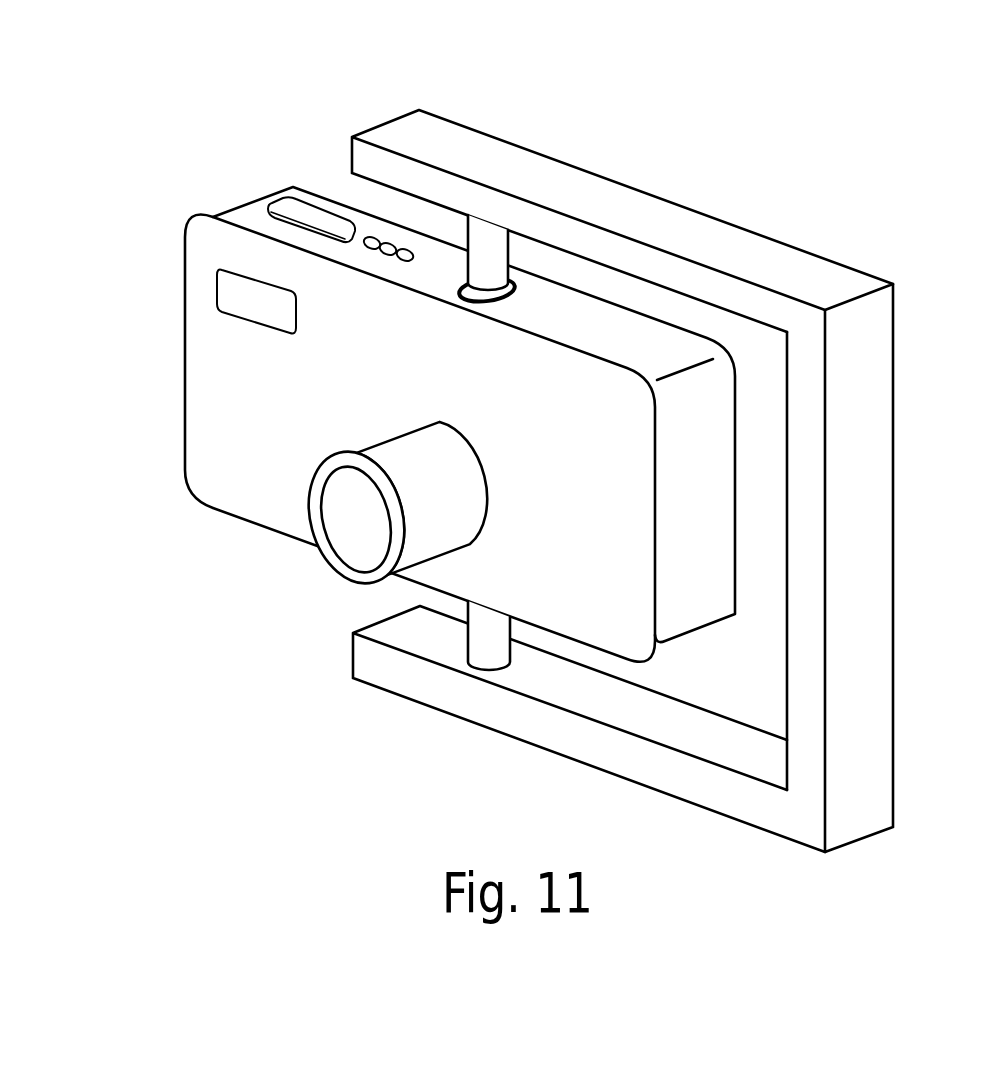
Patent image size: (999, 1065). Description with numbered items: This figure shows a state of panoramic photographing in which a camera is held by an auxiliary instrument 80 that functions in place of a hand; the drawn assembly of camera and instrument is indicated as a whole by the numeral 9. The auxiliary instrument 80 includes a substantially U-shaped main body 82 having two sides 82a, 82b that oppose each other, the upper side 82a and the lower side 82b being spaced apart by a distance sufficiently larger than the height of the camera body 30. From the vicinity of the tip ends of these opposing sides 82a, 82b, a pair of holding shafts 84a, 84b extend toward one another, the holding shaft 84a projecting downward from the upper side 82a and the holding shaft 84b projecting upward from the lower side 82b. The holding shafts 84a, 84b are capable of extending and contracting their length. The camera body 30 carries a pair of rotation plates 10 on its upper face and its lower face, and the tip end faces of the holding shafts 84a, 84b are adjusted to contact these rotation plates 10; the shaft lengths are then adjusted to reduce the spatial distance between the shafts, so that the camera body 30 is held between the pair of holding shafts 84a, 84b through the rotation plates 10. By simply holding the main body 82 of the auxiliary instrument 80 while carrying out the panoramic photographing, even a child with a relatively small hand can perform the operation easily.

The imaging system / camera assembly 9 is at (197, 118).
The rotation plate 10 is at (338, 543).
The camera body 30 is at (213, 410).
The auxiliary instrument 80 is at (667, 481).
The main body 82 is at (880, 563).
The side 82a is at (627, 205).
The side 82b is at (575, 743).
The holding shaft 84a is at (480, 232).
The holding shaft 84b is at (476, 643).